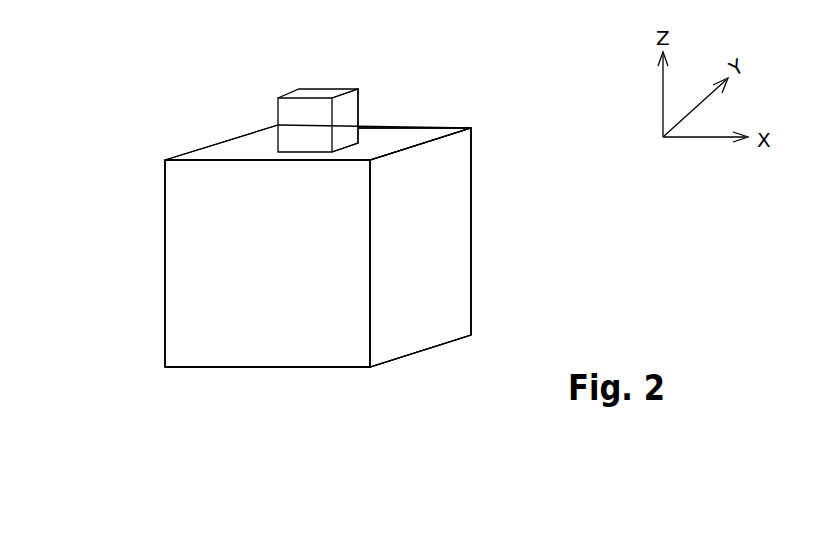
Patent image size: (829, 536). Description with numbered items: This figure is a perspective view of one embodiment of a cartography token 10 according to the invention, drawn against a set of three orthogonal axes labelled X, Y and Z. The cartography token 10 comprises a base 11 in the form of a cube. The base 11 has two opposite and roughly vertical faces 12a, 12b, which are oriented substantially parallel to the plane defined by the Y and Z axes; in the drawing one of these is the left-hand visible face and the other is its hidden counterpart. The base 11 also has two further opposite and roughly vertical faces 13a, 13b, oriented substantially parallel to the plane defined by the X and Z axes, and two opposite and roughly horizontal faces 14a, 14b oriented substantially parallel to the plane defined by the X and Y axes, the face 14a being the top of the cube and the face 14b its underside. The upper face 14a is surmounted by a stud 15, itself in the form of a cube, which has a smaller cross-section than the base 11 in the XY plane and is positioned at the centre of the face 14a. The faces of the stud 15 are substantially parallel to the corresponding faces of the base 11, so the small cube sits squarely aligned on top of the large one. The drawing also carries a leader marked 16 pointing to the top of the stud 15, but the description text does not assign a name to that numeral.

The cartography token 10 is at (457, 103).
The base 11 is at (308, 345).
The vertical face 12a is at (162, 210).
The vertical face 12b is at (408, 230).
The vertical face 13a is at (200, 268).
The vertical face 13b is at (473, 182).
The horizontal face 14a is at (231, 157).
The horizontal face 14b is at (258, 370).
The stud 15 is at (358, 113).
The connector block 16 is at (323, 90).